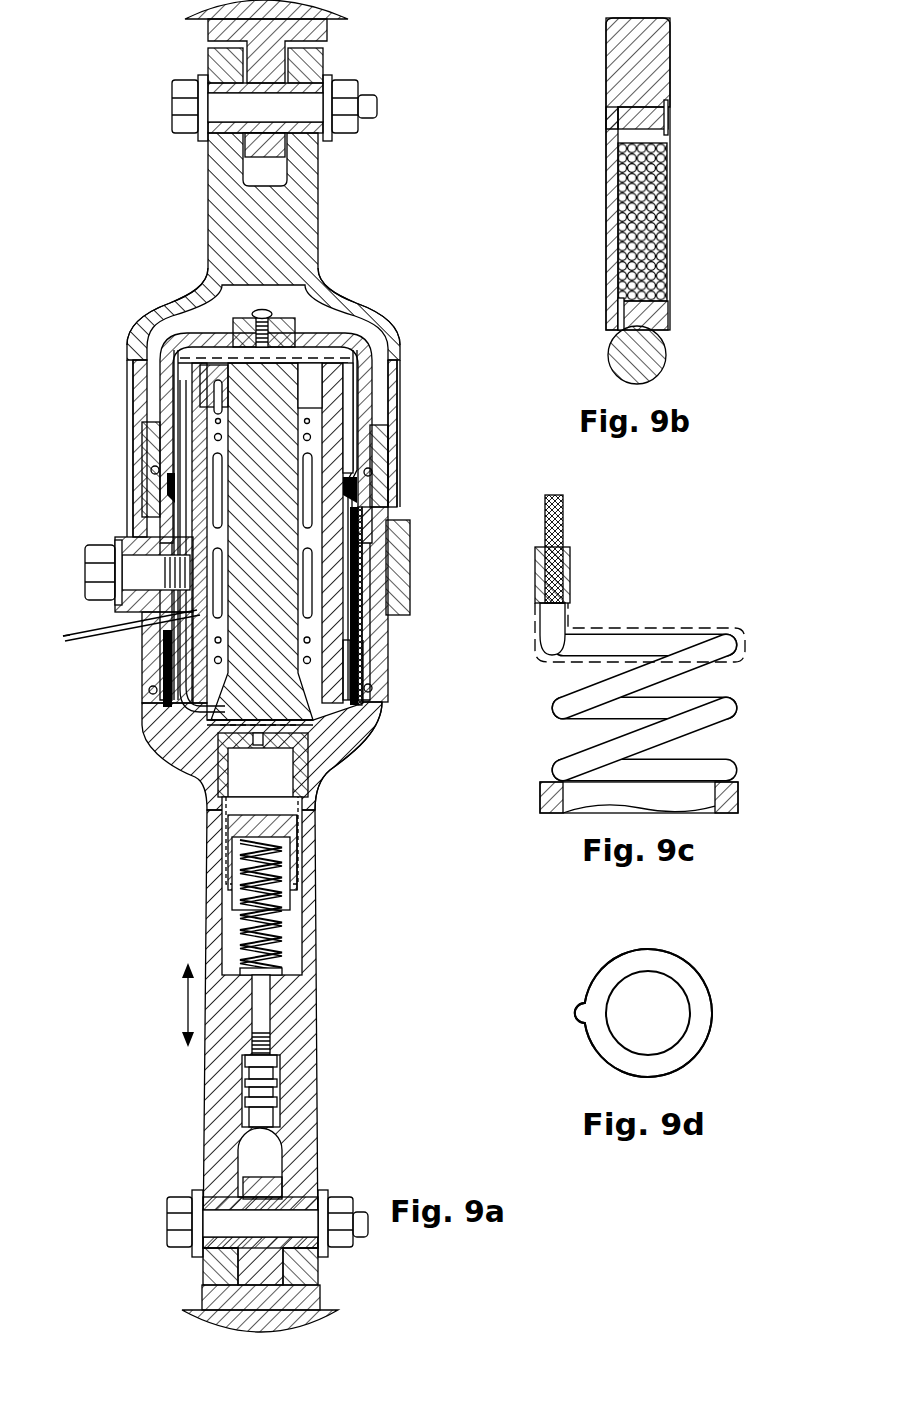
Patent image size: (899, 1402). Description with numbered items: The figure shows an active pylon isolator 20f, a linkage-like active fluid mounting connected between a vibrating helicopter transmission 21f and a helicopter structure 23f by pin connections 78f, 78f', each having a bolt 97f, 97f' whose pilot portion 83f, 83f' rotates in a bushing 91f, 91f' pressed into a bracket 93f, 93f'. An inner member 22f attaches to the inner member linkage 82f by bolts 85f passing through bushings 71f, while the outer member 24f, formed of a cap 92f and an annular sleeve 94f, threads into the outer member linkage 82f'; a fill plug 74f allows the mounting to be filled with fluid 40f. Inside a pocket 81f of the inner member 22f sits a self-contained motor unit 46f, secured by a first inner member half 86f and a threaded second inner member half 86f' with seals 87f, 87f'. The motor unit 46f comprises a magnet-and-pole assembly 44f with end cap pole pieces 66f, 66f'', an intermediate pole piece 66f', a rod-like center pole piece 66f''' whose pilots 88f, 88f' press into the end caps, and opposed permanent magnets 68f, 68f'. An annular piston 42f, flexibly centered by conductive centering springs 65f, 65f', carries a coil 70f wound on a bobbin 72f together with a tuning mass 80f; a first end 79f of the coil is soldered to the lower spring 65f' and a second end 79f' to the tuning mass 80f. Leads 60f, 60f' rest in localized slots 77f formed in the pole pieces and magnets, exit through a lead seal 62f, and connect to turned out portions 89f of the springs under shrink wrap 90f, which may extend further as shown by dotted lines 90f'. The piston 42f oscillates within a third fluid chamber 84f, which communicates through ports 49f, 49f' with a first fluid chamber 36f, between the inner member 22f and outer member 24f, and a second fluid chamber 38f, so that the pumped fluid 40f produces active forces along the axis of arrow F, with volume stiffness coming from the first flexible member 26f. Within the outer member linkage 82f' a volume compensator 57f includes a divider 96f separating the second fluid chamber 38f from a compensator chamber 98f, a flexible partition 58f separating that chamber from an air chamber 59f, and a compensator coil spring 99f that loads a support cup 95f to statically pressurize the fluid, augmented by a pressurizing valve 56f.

In FIG. 9A, the active pylon isolator 20f is at (395, 322).
In FIG. 9A, the vibrating helicopter transmission 21f is at (330, 19).
In FIG. 9A, the inner member 22f is at (360, 693).
In FIG. 9A, the helicopter structure 23f is at (332, 1316).
In FIG. 9A, the outer member 24f is at (378, 416).
In FIG. 9A, the first flexible member 26f is at (410, 540).
In FIG. 9A, the first fluid chamber 36f is at (374, 343).
In FIG. 9A, the second fluid chamber 38f is at (340, 762).
In FIG. 9A, the fluid 40f is at (165, 326).
In FIG. 9A, the piston 42f is at (370, 618).
In FIG. 9B, the piston 42f is at (600, 180).
In FIG. 9A, the magnet-and-pole assembly 44f is at (348, 722).
In FIG. 9A, the motor unit 46f is at (338, 627).
In FIG. 9A, the port 49f is at (363, 284).
In FIG. 9A, the port 49f' is at (315, 787).
In FIG. 9A, the pressurizing valve 56f is at (275, 1088).
In FIG. 9A, the volume compensator 57f is at (222, 878).
In FIG. 9A, the flexible partition 58f is at (306, 860).
In FIG. 9A, the air chamber 59f is at (292, 935).
In FIG. 9A, the lead 60f is at (112, 617).
In FIG. 9C, the lead 60f is at (596, 544).
In FIG. 9A, the lead 60f' is at (47, 661).
In FIG. 9A, the lead seal 62f is at (144, 666).
In FIG. 9A, the centering spring 65f is at (389, 533).
In FIG. 9C, the centering spring 65f is at (655, 686).
In FIG. 9A, the centering spring 65f' is at (390, 670).
In FIG. 9B, the centering spring 65f' is at (670, 357).
In FIG. 9A, the end cap pole piece 66f is at (372, 418).
In FIG. 9A, the intermediate pole piece 66f' is at (420, 604).
In FIG. 9A, the end cap pole piece 66f'' is at (403, 713).
In FIG. 9A, the center pole piece 66f''' is at (262, 541).
In FIG. 9A, the permanent magnet 68f is at (312, 500).
In FIG. 9D, the permanent magnet 68f is at (612, 998).
In FIG. 9A, the permanent magnet 68f' is at (320, 668).
In FIG. 9D, the permanent magnet 68f' is at (643, 1013).
In FIG. 9B, the coil 70f is at (662, 200).
In FIG. 9A, the bushing 71f is at (95, 556).
In FIG. 9B, the bobbin 72f is at (606, 248).
In FIG. 9A, the fill plug 74f is at (278, 318).
In FIG. 9D, the localized slot 77f is at (585, 1012).
In FIG. 9A, the pin connection 78f is at (310, 94).
In FIG. 9A, the pin connection 78f' is at (297, 1191).
In FIG. 9B, the first end of coil 79f is at (606, 326).
In FIG. 9B, the second end of coil 79f' is at (680, 117).
In FIG. 9A, the tuning mass 80f is at (135, 538).
In FIG. 9B, the tuning mass 80f is at (660, 55).
In FIG. 9C, the tuning mass 80f is at (548, 796).
In FIG. 9A, the pocket 81f is at (372, 395).
In FIG. 9A, the inner member linkage 82f is at (263, 246).
In FIG. 9A, the outer member linkage 82f' is at (224, 1047).
In FIG. 9A, the pilot portion 83f is at (265, 107).
In FIG. 9A, the pilot portion 83f' is at (260, 1223).
In FIG. 9A, the third fluid chamber 84f is at (148, 422).
In FIG. 9A, the bolt 85f is at (88, 575).
In FIG. 9A, the first inner member half 86f is at (116, 695).
In FIG. 9A, the second inner member half 86f' is at (143, 390).
In FIG. 9A, the seal 87f is at (149, 533).
In FIG. 9A, the seal 87f' is at (221, 599).
In FIG. 9A, the pilot 88f is at (179, 281).
In FIG. 9A, the pilot 88f' is at (241, 756).
In FIG. 9C, the turned out portion 89f is at (562, 606).
In FIG. 9C, the shrink wrap 90f is at (591, 575).
In FIG. 9C, the dotted lines 90f' is at (644, 610).
In FIG. 9A, the bushing 91f is at (203, 163).
In FIG. 9A, the bushing 91f' is at (206, 1178).
In FIG. 9A, the cap 92f is at (163, 340).
In FIG. 9A, the bracket 93f is at (213, 51).
In FIG. 9A, the bracket 93f' is at (220, 1279).
In FIG. 9A, the annular sleeve 94f is at (180, 500).
In FIG. 9A, the support cup 95f is at (290, 897).
In FIG. 9A, the divider 96f is at (228, 775).
In FIG. 9A, the bolt 97f is at (236, 107).
In FIG. 9A, the bolt 97f' is at (231, 1222).
In FIG. 9A, the compensator chamber 98f is at (224, 806).
In FIG. 9A, the compensator coil spring 99f is at (304, 980).
In FIG. 9A, the arrow F is at (186, 1008).